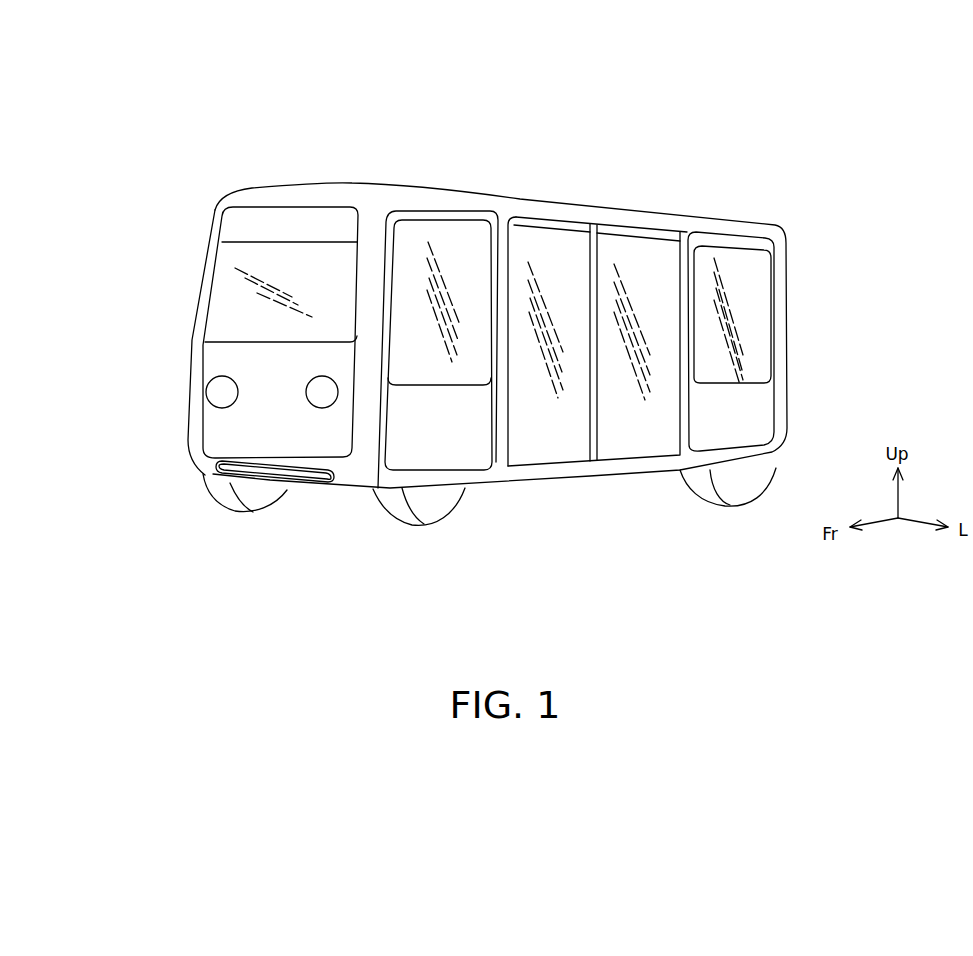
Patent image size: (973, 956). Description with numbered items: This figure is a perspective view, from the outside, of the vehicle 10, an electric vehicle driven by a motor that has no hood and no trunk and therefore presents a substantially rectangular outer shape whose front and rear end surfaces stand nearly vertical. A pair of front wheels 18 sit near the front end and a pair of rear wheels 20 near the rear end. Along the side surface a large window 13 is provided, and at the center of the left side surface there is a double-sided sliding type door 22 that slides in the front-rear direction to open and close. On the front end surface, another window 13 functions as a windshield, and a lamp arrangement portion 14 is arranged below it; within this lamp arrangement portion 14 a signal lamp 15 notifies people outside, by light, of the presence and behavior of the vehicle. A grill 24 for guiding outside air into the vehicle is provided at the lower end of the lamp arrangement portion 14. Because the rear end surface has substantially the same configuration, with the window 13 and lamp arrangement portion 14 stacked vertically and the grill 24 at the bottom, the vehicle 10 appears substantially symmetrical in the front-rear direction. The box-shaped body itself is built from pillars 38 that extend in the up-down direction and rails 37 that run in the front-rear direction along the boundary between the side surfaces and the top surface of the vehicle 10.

The vehicle 10 is at (492, 110).
The window 13 is at (271, 253).
The lamp arrangement portion 14 is at (217, 360).
The signal lamp 15 is at (200, 392).
The front wheels 18 is at (218, 492).
The rear wheels 20 is at (760, 477).
The door 22 is at (570, 245).
The grill 24 is at (266, 472).
The rails 37 is at (631, 217).
The pillars 38 is at (208, 260).